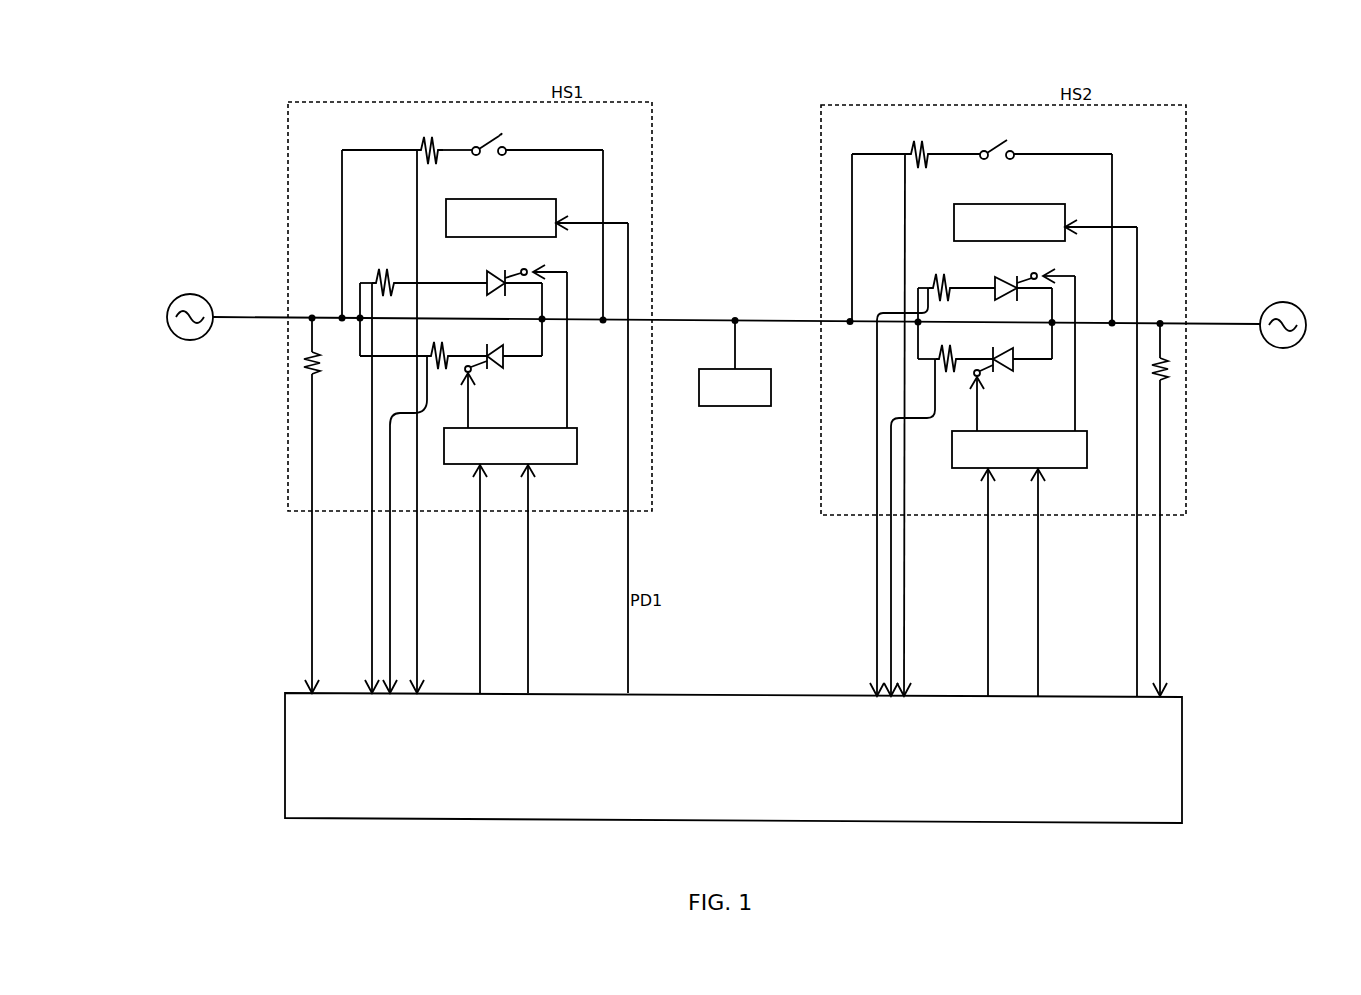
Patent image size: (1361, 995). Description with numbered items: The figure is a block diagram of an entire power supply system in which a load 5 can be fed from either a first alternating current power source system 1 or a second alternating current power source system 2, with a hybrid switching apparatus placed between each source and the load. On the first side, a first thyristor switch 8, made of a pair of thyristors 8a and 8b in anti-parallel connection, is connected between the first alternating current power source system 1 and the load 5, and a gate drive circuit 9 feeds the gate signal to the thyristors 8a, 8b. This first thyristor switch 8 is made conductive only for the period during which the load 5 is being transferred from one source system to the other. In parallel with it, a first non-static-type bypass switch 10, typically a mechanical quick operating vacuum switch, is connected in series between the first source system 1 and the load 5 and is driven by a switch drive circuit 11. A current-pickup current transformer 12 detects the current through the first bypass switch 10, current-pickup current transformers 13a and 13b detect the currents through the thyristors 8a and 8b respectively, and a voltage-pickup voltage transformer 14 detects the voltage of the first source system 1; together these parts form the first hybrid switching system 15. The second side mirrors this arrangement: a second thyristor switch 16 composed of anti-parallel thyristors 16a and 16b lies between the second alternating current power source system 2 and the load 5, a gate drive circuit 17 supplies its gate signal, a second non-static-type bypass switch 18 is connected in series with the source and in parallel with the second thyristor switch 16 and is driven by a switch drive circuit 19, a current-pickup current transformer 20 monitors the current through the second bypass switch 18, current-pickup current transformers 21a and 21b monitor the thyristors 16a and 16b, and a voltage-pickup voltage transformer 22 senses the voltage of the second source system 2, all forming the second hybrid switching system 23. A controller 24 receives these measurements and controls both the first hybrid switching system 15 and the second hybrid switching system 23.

The first alternating current power source system 1 is at (186, 341).
The second alternating current power source system 2 is at (1282, 349).
The load 5 is at (729, 412).
The first thyristor switch 8 is at (513, 346).
The thyristor 8a is at (513, 280).
The thyristor 8b is at (465, 346).
The gate drive circuit 9 is at (447, 427).
The first non-static-type bypass switch 10 is at (506, 139).
The switch drive circuit 11 is at (557, 208).
The current-pickup current transformer 12 is at (424, 141).
The current-pickup current transformer 13a is at (385, 274).
The current-pickup current transformer 13b is at (442, 344).
The voltage-pickup voltage transformer 14 is at (322, 505).
The first hybrid switching system 15 is at (490, 101).
The second thyristor switch 16 is at (1020, 349).
The thyristor 16a is at (1020, 284).
The thyristor 16b is at (972, 352).
The gate drive circuit 17 is at (1030, 432).
The second non-static-type bypass switch 18 is at (1014, 143).
The switch drive circuit 19 is at (1066, 212).
The current-pickup current transformer 20 is at (917, 144).
The current-pickup current transformer 21a is at (941, 279).
The current-pickup current transformer 21b is at (950, 348).
The voltage-pickup voltage transformer 22 is at (1167, 509).
The second hybrid switching system 23 is at (997, 103).
The controller 24 is at (733, 758).